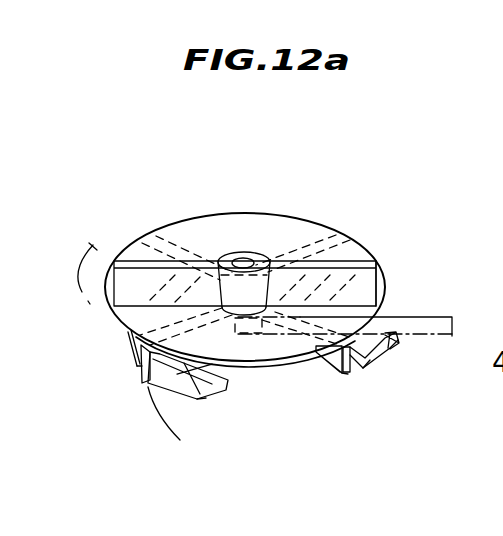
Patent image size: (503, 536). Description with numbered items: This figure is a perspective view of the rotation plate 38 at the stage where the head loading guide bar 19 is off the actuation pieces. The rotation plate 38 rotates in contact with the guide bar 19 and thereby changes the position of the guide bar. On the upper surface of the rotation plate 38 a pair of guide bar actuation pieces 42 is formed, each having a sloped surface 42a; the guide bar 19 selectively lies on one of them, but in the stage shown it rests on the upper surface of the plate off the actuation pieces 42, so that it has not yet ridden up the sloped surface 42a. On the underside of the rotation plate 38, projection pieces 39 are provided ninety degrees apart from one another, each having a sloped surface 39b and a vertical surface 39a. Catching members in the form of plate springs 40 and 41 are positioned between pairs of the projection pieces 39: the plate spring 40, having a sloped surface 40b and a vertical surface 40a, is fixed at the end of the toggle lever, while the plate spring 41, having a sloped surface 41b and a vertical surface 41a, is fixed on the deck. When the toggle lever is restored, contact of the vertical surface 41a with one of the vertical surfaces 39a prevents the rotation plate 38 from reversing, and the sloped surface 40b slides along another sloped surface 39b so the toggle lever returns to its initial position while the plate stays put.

The rotation plate 38 is at (198, 220).
The guide bar actuation piece 42 is at (293, 263).
The sloped surface 42a is at (380, 270).
The guide bar 19 is at (430, 321).
The projection piece 39 is at (128, 345).
The vertical surface 39a is at (135, 357).
The sloped surface 39b is at (325, 360).
The plate spring 40 is at (200, 385).
The vertical surface 40a is at (124, 377).
The sloped surface 40b is at (208, 398).
The plate spring 41 is at (397, 345).
The vertical surface 41a is at (348, 374).
The sloped surface 41b is at (370, 360).